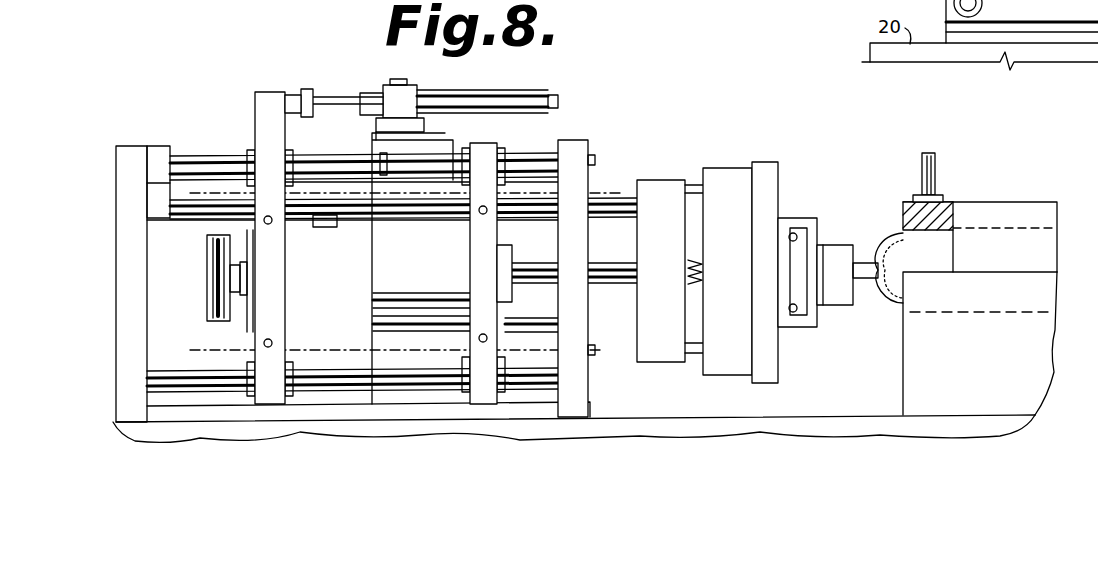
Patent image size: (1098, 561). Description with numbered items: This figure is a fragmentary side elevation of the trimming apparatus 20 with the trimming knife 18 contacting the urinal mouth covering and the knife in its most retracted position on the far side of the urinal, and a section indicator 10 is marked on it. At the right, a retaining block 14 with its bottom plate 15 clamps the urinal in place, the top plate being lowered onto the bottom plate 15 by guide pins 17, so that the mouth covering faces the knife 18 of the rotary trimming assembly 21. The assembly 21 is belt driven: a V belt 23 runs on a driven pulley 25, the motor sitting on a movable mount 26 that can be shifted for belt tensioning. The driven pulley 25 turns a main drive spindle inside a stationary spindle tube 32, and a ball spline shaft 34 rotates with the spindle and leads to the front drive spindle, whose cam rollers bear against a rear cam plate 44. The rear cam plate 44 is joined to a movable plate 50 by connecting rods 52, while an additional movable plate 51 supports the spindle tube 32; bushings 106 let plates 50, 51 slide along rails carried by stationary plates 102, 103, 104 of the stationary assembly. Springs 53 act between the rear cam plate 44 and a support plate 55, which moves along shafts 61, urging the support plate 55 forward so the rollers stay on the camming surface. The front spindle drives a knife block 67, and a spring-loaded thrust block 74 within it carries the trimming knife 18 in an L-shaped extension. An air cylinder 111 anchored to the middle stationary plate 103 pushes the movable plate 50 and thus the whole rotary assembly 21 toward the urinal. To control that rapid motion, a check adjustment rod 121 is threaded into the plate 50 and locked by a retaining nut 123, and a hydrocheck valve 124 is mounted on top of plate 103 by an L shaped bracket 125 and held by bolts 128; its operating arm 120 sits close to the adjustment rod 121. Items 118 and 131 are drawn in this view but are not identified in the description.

The section line 10 is at (195, 140).
The retaining block 14 is at (1040, 202).
The bottom plate 15 is at (1012, 272).
The guide pins 17 is at (936, 174).
The trimming knife 18 is at (866, 263).
The trimming apparatus 20 is at (800, 414).
The rotary trimming assembly 21 is at (776, 163).
The V belt 23 is at (206, 243).
The driven pulley 25 is at (206, 320).
The movable mount 26 is at (420, 353).
The spindle tube 32 is at (508, 250).
The ball spline shaft 34 is at (612, 264).
The rear cam plate 44 is at (673, 253).
The movable plate 50 is at (470, 241).
The movable plate 51 is at (257, 128).
The connecting rods 52 is at (612, 198).
The springs 53 is at (699, 268).
The support plate 55 is at (738, 172).
The shafts 61 is at (692, 178).
The knife block 67 is at (803, 219).
The thrust block 74 is at (852, 306).
The stationary plate 102 is at (140, 147).
The middle stationary plate 103 is at (365, 273).
The stationary plate 104 is at (573, 146).
The bushings 106 is at (246, 370).
The air cylinder 111 is at (204, 187).
The valve body 118 is at (380, 117).
The operating arm 120 is at (340, 97).
The check adjustment rod 121 is at (304, 89).
The retaining nut 123 is at (290, 97).
The hydrocheck valve 124 is at (528, 92).
The L shaped bracket 125 is at (420, 143).
The bolts 128 is at (393, 80).
The rod end 131 is at (558, 103).